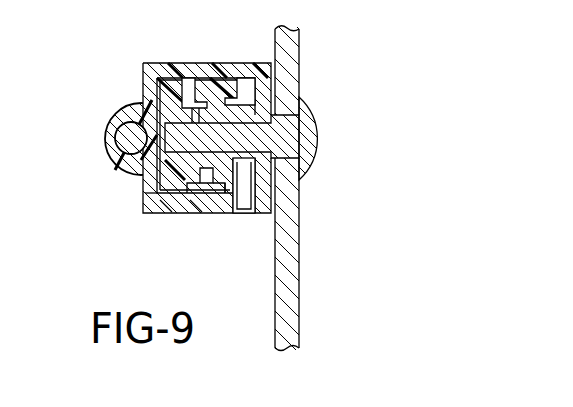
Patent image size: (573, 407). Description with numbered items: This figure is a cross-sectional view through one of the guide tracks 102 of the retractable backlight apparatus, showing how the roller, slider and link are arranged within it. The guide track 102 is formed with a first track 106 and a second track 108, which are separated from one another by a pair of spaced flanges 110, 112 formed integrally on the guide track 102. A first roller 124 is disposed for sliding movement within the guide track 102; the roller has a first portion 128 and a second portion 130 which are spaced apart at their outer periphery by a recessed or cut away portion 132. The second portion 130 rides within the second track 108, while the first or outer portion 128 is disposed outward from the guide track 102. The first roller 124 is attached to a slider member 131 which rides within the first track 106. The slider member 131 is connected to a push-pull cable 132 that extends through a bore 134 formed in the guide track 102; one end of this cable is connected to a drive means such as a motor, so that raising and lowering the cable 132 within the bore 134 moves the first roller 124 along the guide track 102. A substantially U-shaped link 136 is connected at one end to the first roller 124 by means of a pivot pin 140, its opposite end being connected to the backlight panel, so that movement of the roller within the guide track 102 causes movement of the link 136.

The guide track 102 is at (188, 28).
The first track 106 is at (145, 65).
The second track 108 is at (216, 68).
The flange 110 is at (183, 215).
The flange 112 is at (199, 82).
The first roller 124 is at (245, 166).
The first portion 128 is at (263, 183).
The second portion 130 is at (217, 180).
The slider member 131 is at (150, 188).
The push-pull cable 132 is at (115, 127).
The bore 134 is at (113, 138).
The link 136 is at (293, 250).
The pivot pin 140 is at (306, 140).